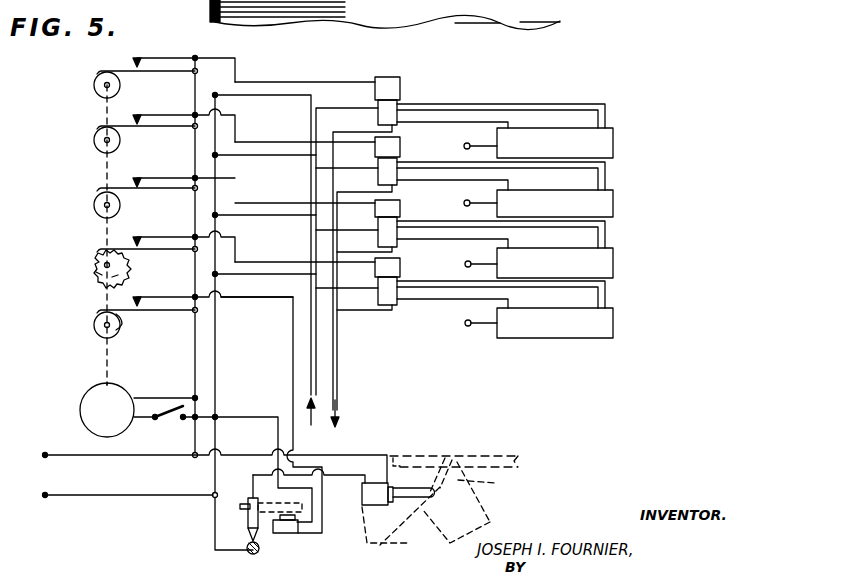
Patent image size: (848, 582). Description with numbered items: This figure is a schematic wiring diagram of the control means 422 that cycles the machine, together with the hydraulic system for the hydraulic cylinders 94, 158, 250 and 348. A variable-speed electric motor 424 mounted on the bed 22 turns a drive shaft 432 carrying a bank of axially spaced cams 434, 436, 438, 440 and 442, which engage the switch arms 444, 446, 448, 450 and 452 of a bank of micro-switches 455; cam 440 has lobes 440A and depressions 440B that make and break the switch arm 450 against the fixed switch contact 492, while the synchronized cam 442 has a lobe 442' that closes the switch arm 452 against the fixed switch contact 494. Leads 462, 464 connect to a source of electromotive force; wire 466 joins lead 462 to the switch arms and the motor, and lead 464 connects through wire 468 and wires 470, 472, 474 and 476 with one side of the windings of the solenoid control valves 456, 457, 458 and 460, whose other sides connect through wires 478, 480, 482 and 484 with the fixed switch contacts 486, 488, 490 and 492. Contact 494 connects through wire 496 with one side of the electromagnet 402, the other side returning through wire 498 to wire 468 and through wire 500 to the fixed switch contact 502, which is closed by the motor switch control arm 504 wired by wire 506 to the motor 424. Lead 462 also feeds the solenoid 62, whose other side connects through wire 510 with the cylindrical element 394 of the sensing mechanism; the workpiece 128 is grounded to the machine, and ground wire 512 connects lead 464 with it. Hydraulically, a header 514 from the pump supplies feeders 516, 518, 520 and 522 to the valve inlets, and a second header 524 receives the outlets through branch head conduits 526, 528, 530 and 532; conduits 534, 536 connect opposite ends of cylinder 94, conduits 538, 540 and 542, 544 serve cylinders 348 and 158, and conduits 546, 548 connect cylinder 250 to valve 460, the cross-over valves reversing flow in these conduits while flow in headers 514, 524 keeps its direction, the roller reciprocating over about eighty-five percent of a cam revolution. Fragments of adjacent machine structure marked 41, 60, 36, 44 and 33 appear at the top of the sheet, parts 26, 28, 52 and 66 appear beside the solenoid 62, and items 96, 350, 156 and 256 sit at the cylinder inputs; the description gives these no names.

The roller 41 is at (212, 6).
The shaft 60 is at (366, 22).
The frame member 36 is at (466, 24).
The bearing 44 is at (545, 12).
The support 33 is at (627, 3).
The bed 22 is at (500, 455).
The base 26 is at (373, 550).
The clamp 28 is at (482, 505).
The lever 52 is at (470, 490).
The solenoid 62 is at (367, 508).
The plunger rod 66 is at (405, 490).
The hydraulic cylinder 94 is at (613, 130).
The feeding switch input 96 is at (464, 146).
The workpiece 128 is at (250, 556).
The setting roller switch input 156 is at (470, 252).
The hydraulic cylinder 158 is at (612, 287).
The hydraulic cylinder 250 is at (605, 338).
The camming switch input 256 is at (464, 324).
The hydraulic cylinder 348 is at (612, 226).
The clamping switch input 350 is at (465, 203).
The cylindrical element 394 is at (240, 523).
The electromagnet 402 is at (290, 535).
The control means 422 is at (70, 212).
The variable-speed electric motor 424 is at (82, 416).
The drive shaft 432 is at (107, 362).
The cam 434 is at (94, 88).
The cam 436 is at (94, 143).
The cam 438 is at (94, 202).
The cam 440 is at (93, 263).
The lobe 440A is at (95, 273).
The depression 440B is at (118, 276).
The cam 442 is at (80, 325).
The lobe 442' is at (133, 331).
The switch arm 444 is at (160, 71).
The switch arm 446 is at (160, 126).
The switch arm 448 is at (160, 188).
The switch arm 450 is at (165, 248).
The switch arm 452 is at (162, 308).
The bank of micro-switches 455 is at (202, 92).
The solenoid control valve 456 is at (395, 105).
The solenoid control valve 457 is at (402, 148).
The solenoid control valve 458 is at (400, 212).
The solenoid control valve 460 is at (400, 272).
The lead 462 is at (95, 456).
The lead 464 is at (95, 499).
The wire 466 is at (195, 441).
The wire 468 is at (220, 385).
The wire 470 is at (260, 97).
The wire 472 is at (260, 147).
The wire 474 is at (260, 207).
The wire 476 is at (269, 273).
The wire 478 is at (324, 83).
The wire 480 is at (298, 141).
The wire 482 is at (264, 206).
The wire 484 is at (264, 262).
The fixed switch contact 486 is at (137, 61).
The fixed switch contact 488 is at (137, 118).
The fixed switch contact 490 is at (137, 181).
The fixed switch contact 492 is at (137, 241).
The fixed switch contact 494 is at (137, 301).
The wire 496 is at (240, 304).
The wire 498 is at (237, 418).
The wire 500 is at (216, 417).
The fixed switch contact 502 is at (170, 420).
The motor switch control arm 504 is at (173, 407).
The wire 506 is at (140, 420).
The wire 510 is at (345, 478).
The wire 512 is at (213, 546).
The header 514 is at (340, 345).
The feeder 516 is at (355, 113).
The feeder 518 is at (371, 171).
The feeder 520 is at (367, 235).
The feeder 522 is at (344, 294).
The second header 524 is at (340, 366).
The branch head conduit 526 is at (361, 131).
The branch head conduit 528 is at (371, 195).
The branch head conduit 530 is at (371, 255).
The branch head conduit 532 is at (358, 306).
The conduit 534 is at (560, 103).
The conduit 536 is at (513, 121).
The conduit 538 is at (607, 177).
The conduit 540 is at (513, 183).
The conduit 542 is at (610, 242).
The conduit 544 is at (513, 245).
The conduit 546 is at (610, 302).
The conduit 548 is at (513, 303).